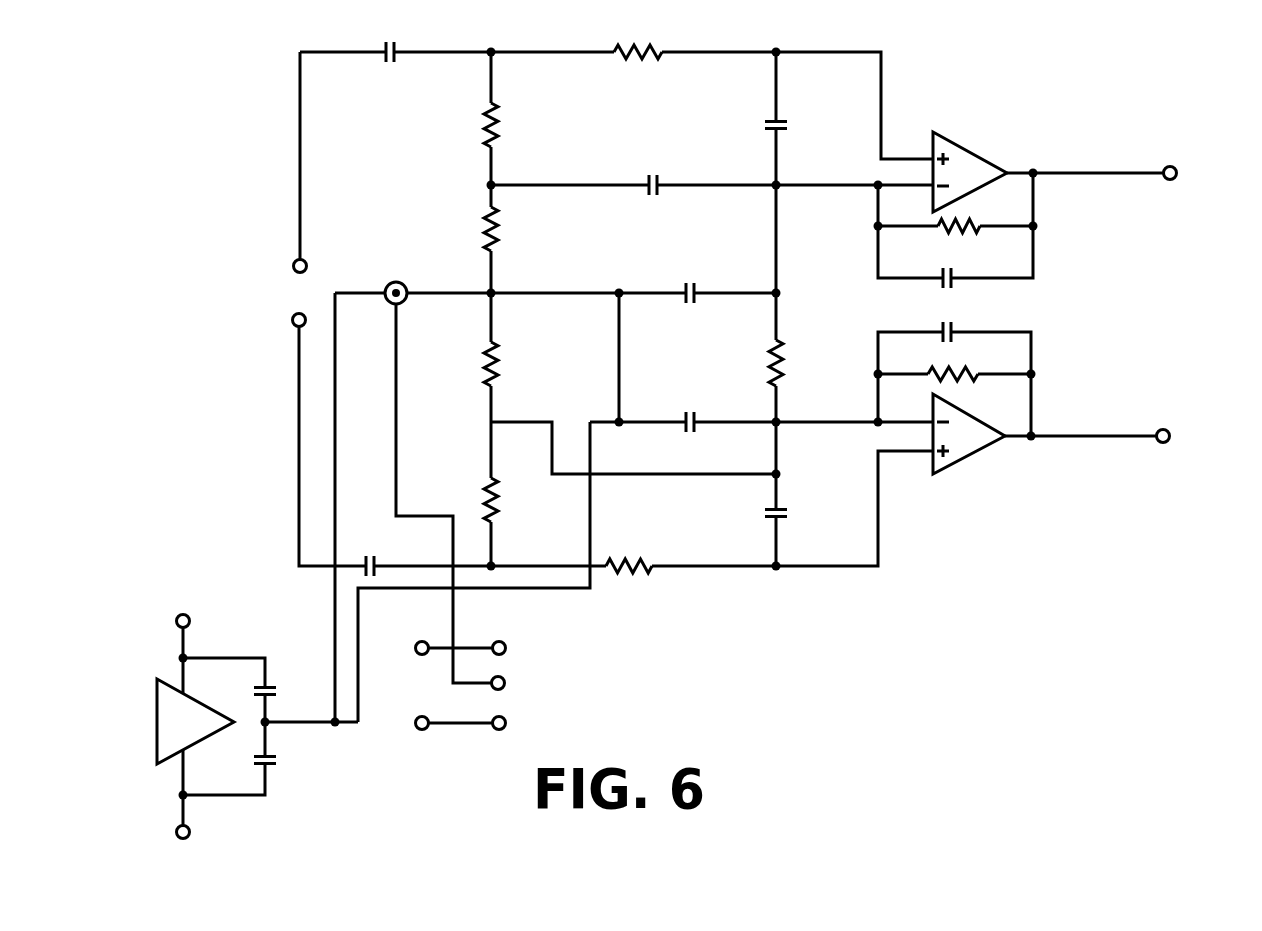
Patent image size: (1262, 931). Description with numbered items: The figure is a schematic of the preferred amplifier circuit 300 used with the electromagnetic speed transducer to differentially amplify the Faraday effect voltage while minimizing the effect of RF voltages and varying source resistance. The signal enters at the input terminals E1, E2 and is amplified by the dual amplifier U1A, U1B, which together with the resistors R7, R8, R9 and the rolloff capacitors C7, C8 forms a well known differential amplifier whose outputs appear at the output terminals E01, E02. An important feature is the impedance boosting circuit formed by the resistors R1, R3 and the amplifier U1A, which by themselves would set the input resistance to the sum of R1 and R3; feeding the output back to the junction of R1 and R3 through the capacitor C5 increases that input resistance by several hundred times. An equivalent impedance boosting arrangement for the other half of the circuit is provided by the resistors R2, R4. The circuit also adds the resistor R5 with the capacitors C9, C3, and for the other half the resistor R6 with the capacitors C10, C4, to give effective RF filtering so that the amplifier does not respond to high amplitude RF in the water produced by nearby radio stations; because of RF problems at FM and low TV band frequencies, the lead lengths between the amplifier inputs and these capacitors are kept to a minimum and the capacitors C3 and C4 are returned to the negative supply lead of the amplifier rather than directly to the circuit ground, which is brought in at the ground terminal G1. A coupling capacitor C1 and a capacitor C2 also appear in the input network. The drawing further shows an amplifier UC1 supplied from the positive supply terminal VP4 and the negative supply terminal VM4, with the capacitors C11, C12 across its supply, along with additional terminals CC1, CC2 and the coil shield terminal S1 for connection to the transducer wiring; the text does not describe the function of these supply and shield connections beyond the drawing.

The amplifier circuit 300 is at (1072, 548).
The resistor R1 is at (474, 125).
The resistor R2 is at (471, 500).
The resistor R3 is at (473, 229).
The resistor R4 is at (474, 364).
The resistor R5 is at (638, 37).
The resistor R6 is at (629, 549).
The resistor R7 is at (795, 363).
The resistor R8 is at (968, 215).
The resistor R9 is at (955, 362).
The capacitor C1 is at (373, 550).
The capacitor C2 is at (391, 39).
The capacitor C3 is at (687, 279).
The capacitor C4 is at (687, 409).
The capacitor C5 is at (647, 171).
The rolloff capacitor C7 is at (941, 263).
The rolloff capacitor C8 is at (943, 321).
The capacitor C9 is at (762, 115).
The capacitor C10 is at (758, 514).
The capacitor C11 is at (341, 670).
The capacitor C12 is at (341, 743).
The amplifier U1A is at (971, 169).
The amplifier U1B is at (969, 441).
The amplifier UC1 is at (195, 721).
The input terminal E1 is at (284, 267).
The input terminal E2 is at (282, 320).
The output terminal E01 is at (1197, 174).
The output terminal E02 is at (1194, 438).
The ground terminal G1 is at (396, 277).
The positive supply terminal VP4 is at (164, 609).
The negative supply terminal VM4 is at (162, 844).
The terminal CC1 is at (523, 648).
The terminal CC2 is at (525, 723).
The coil shield terminal S1 is at (591, 683).